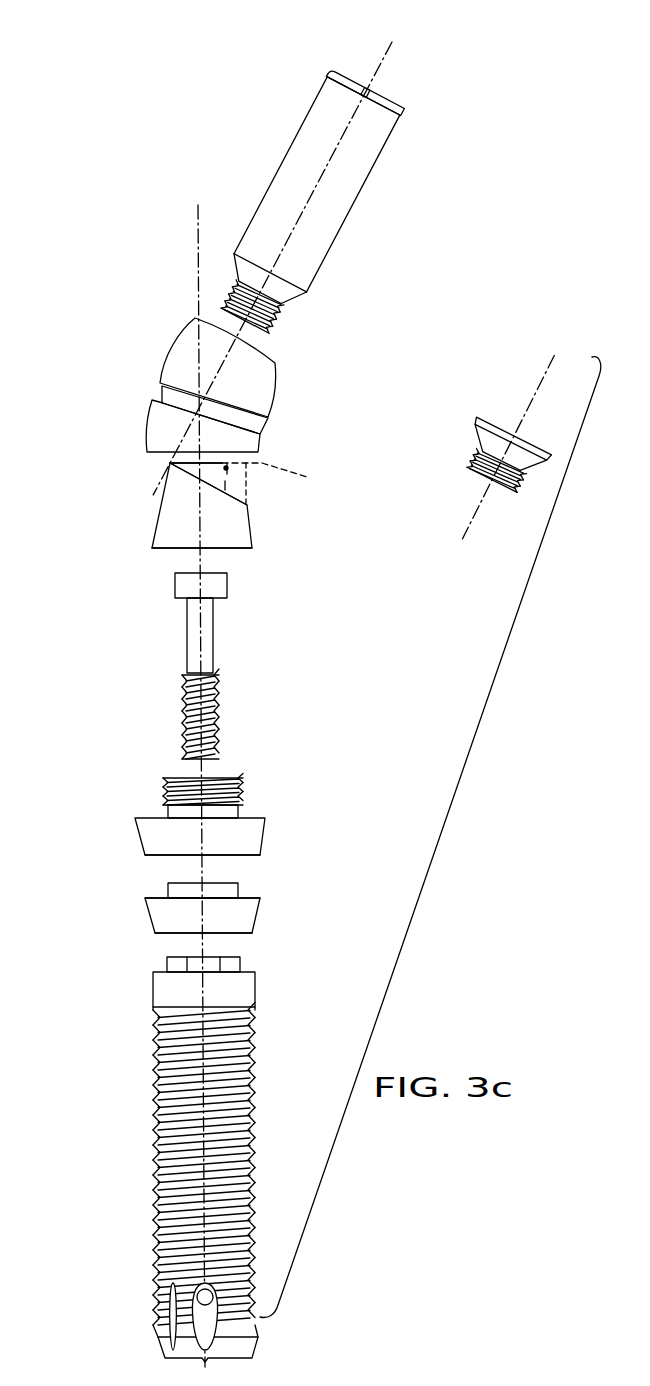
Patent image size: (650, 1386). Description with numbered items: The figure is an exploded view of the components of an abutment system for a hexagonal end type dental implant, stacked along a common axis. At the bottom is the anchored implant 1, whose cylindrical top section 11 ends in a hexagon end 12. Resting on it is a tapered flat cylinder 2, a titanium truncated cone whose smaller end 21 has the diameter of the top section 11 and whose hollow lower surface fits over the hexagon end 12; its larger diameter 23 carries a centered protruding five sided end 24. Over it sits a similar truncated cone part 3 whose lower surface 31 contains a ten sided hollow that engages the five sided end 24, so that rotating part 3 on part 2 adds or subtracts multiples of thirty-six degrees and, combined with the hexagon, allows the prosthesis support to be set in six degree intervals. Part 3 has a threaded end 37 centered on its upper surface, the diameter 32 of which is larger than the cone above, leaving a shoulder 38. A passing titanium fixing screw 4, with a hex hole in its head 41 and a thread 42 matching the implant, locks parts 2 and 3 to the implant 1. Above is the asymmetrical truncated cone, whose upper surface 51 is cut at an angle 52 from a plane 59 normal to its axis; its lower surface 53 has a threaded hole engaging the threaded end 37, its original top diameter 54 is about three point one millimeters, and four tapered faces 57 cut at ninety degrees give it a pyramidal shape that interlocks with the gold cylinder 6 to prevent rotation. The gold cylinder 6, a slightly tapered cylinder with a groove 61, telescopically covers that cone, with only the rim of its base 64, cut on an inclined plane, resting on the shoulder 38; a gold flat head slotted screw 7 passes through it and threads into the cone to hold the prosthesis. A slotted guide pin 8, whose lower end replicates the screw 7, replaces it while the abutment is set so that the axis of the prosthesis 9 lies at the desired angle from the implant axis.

The implant 1 is at (159, 1159).
The cylindrical top section 11 is at (152, 973).
The hexagon end 12 is at (167, 960).
The tapered flat cylinder 2 is at (235, 940).
The smaller end 21 is at (243, 937).
The larger diameter 23 is at (260, 898).
The protruding five sided end 24 is at (240, 890).
The truncated cone part 3 is at (210, 837).
The lower surface 31 is at (260, 855).
The upper surface diameter 32 is at (265, 818).
The threaded end 37 is at (210, 806).
The shoulder 38 is at (253, 818).
The fixing screw 4 is at (141, 669).
The head 41 is at (175, 598).
The thread 42 is at (185, 734).
The upper surface 51 is at (250, 497).
The angle 52 is at (228, 487).
The lower surface 53 is at (253, 550).
The original top diameter 54 is at (170, 463).
The tapered faces 57 is at (225, 532).
The plane normal to main axis 59 is at (314, 481).
The gold cylinder 6 is at (207, 350).
The groove 61 is at (160, 387).
The rim of base 64 is at (260, 455).
The gold screw 7 is at (517, 457).
The slotted guide pin 8 is at (347, 141).
The axis of the prosthesis 9 is at (392, 46).